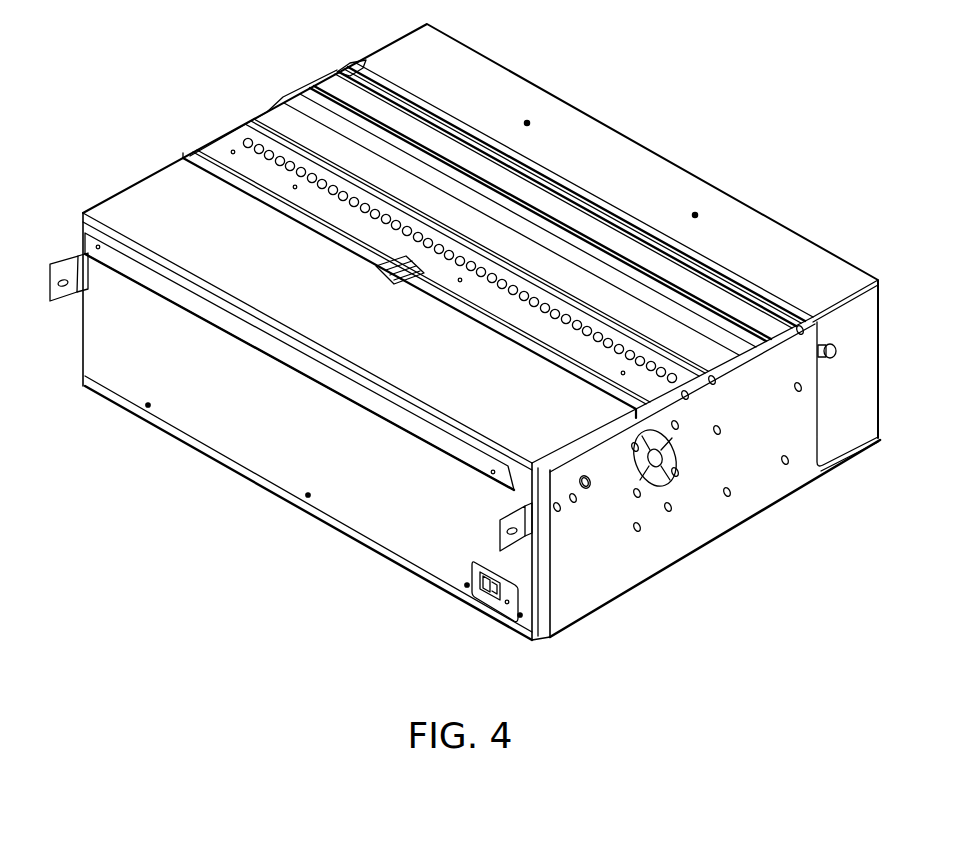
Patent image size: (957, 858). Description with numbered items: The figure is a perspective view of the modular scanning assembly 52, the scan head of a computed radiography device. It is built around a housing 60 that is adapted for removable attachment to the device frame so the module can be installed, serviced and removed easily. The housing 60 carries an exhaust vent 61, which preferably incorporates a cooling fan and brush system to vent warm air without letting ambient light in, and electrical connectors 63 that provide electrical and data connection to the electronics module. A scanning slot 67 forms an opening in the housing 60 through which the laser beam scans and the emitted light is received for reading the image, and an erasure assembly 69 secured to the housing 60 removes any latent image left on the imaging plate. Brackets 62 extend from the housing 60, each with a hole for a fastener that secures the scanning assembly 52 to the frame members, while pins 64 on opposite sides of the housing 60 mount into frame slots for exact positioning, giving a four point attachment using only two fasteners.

The modular scanning assembly 52 is at (720, 182).
The housing 60 is at (773, 435).
The exhaust vent 61 is at (665, 482).
The brackets 62 is at (57, 302).
The electrical connectors 63 is at (508, 603).
The pins 64 is at (350, 65).
The scanning slot 67 is at (313, 87).
The erasure assembly 69 is at (250, 137).